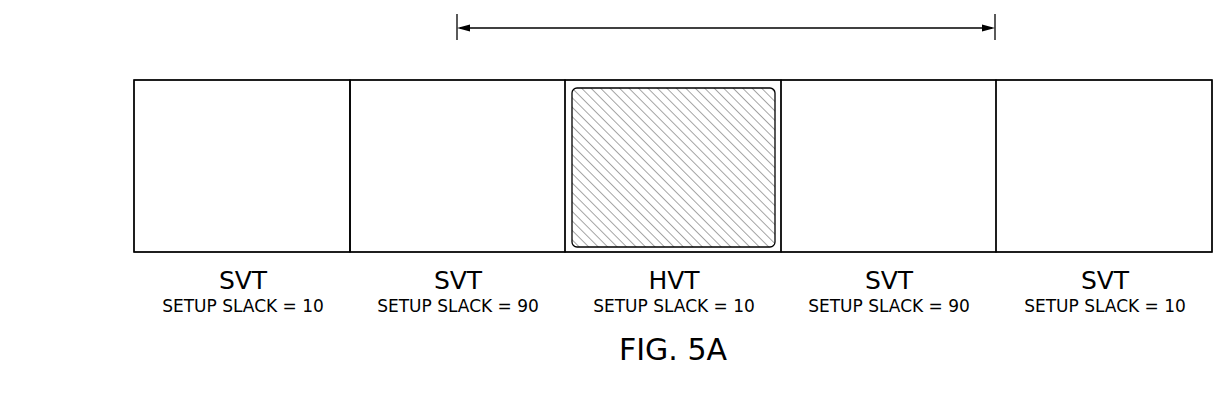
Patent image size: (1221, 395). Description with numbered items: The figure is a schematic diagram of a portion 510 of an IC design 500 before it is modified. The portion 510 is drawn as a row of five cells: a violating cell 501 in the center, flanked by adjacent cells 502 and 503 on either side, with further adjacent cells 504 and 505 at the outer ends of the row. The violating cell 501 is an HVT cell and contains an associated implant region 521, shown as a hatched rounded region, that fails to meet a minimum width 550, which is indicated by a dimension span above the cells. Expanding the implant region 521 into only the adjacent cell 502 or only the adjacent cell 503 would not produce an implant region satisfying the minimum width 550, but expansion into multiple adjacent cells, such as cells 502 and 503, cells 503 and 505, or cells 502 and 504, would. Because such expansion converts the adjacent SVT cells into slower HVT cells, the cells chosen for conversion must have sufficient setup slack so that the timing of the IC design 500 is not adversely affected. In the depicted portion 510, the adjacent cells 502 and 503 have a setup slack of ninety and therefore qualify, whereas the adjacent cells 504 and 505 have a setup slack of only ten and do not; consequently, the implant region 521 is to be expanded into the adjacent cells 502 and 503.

The IC design 500 is at (189, 46).
The portion 510 is at (334, 70).
The violating cell 501 is at (682, 149).
The adjacent cell 502 is at (439, 120).
The adjacent cell 503 is at (869, 120).
The adjacent cell 504 is at (223, 120).
The adjacent cell 505 is at (1085, 120).
The implant region 521 is at (724, 87).
The minimum width 550 is at (708, 29).